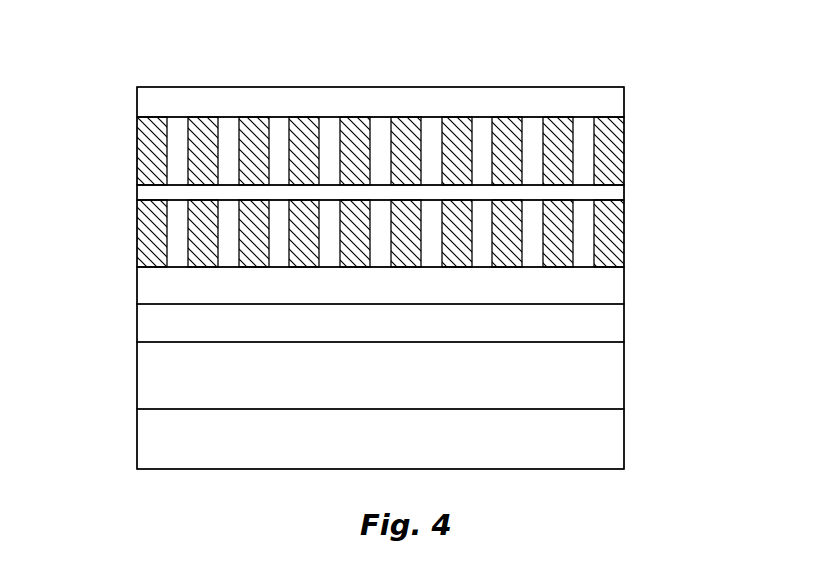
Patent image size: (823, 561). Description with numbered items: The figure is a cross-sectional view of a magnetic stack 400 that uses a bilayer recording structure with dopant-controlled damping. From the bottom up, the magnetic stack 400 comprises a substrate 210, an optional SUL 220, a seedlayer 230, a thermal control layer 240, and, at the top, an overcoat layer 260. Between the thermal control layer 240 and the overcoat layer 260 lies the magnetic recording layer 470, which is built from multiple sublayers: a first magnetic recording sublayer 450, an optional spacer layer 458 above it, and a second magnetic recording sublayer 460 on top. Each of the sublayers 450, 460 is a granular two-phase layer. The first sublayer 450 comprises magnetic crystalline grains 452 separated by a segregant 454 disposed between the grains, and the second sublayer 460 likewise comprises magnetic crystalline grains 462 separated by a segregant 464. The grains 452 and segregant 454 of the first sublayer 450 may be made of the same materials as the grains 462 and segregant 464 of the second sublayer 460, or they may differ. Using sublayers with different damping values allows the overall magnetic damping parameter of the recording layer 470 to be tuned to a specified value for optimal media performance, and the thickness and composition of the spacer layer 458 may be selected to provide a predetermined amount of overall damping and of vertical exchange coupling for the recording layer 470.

The magnetic stack 400 is at (104, 50).
The substrate 210 is at (628, 439).
The SUL 220 is at (628, 372).
The seedlayer 230 is at (628, 318).
The thermal control layer 240 is at (629, 287).
The overcoat layer 260 is at (629, 102).
The first magnetic recording sublayer 450 is at (391, 224).
The magnetic crystalline grains 452 is at (136, 195).
The segregant 454 is at (180, 232).
The spacer layer 458 is at (629, 186).
The second magnetic recording sublayer 460 is at (439, 106).
The magnetic crystalline grains 462 is at (205, 133).
The segregant 464 is at (281, 133).
The magnetic recording layer 470 is at (747, 115).